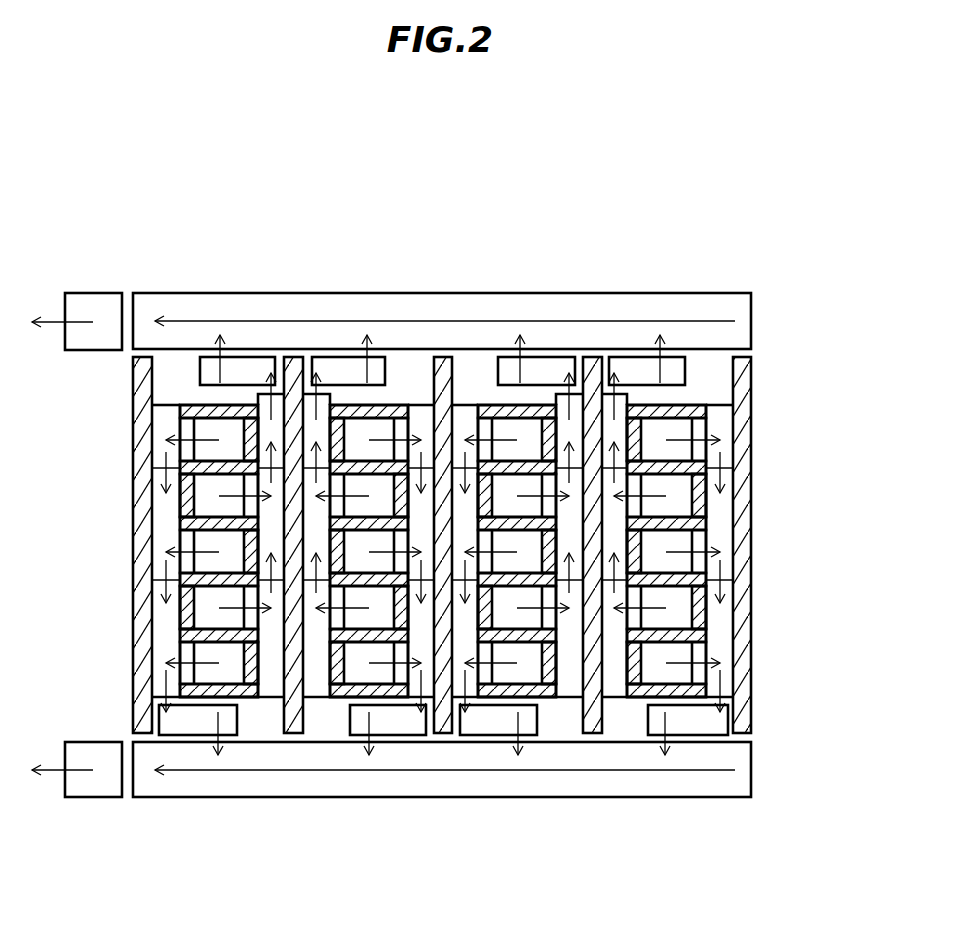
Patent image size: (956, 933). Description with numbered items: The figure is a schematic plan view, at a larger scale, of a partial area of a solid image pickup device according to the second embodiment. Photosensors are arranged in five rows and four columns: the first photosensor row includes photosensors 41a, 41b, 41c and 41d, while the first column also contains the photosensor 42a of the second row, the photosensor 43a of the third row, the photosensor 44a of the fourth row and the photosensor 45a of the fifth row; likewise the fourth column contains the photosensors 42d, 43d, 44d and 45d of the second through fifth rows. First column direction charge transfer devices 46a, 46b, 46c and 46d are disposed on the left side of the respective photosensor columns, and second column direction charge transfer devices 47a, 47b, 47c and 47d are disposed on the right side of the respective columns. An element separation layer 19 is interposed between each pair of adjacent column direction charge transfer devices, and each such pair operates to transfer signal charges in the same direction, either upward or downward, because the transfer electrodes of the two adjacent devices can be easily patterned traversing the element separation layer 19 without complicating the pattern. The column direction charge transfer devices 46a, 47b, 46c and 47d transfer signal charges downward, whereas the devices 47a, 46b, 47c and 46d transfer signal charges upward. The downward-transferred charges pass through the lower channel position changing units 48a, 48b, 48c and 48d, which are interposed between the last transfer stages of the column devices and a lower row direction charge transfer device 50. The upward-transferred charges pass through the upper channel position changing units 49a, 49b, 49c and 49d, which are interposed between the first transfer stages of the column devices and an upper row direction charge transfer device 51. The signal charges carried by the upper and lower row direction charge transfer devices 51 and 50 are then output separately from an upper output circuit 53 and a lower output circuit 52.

The element separation layer 19 is at (293, 737).
The photosensor 41a is at (222, 658).
The photosensor 42a is at (222, 603).
The photosensor 43a is at (222, 545).
The photosensor 44a is at (222, 500).
The photosensor 45a is at (222, 432).
The photosensor 41b is at (360, 668).
The photosensor 41c is at (530, 668).
The photosensor 41d is at (668, 673).
The photosensor 42d is at (668, 613).
The photosensor 43d is at (668, 540).
The photosensor 44d is at (668, 503).
The photosensor 45d is at (668, 430).
The first column direction charge transfer device 46a is at (165, 410).
The first column direction charge transfer device 46b is at (320, 395).
The first column direction charge transfer device 46c is at (468, 410).
The first column direction charge transfer device 46d is at (615, 410).
The second column direction charge transfer device 47a is at (268, 400).
The second column direction charge transfer device 47b is at (420, 490).
The second column direction charge transfer device 47c is at (568, 400).
The second column direction charge transfer device 47d is at (720, 410).
The channel position changing unit 48a is at (192, 722).
The channel position changing unit 48b is at (400, 722).
The channel position changing unit 48c is at (490, 722).
The channel position changing unit 48d is at (665, 722).
The channel position changing unit 49a is at (242, 375).
The channel position changing unit 49b is at (375, 372).
The channel position changing unit 49c is at (520, 372).
The channel position changing unit 49d is at (660, 372).
The row direction charge transfer device 50 is at (690, 790).
The row direction charge transfer device 51 is at (746, 300).
The output circuit 52 is at (83, 798).
The output circuit 53 is at (84, 292).